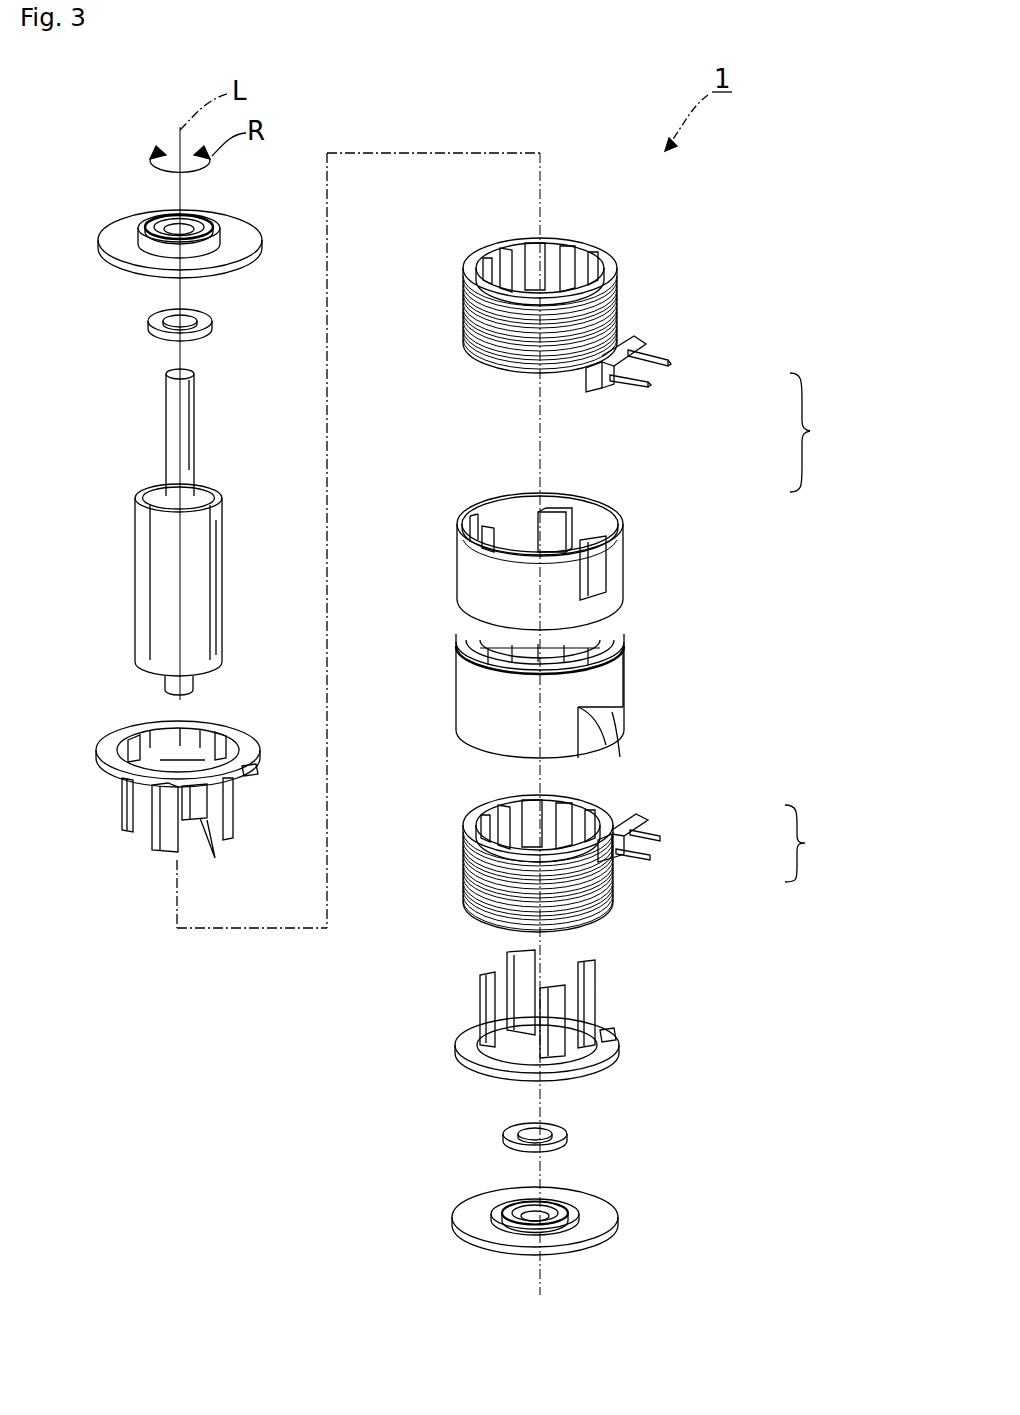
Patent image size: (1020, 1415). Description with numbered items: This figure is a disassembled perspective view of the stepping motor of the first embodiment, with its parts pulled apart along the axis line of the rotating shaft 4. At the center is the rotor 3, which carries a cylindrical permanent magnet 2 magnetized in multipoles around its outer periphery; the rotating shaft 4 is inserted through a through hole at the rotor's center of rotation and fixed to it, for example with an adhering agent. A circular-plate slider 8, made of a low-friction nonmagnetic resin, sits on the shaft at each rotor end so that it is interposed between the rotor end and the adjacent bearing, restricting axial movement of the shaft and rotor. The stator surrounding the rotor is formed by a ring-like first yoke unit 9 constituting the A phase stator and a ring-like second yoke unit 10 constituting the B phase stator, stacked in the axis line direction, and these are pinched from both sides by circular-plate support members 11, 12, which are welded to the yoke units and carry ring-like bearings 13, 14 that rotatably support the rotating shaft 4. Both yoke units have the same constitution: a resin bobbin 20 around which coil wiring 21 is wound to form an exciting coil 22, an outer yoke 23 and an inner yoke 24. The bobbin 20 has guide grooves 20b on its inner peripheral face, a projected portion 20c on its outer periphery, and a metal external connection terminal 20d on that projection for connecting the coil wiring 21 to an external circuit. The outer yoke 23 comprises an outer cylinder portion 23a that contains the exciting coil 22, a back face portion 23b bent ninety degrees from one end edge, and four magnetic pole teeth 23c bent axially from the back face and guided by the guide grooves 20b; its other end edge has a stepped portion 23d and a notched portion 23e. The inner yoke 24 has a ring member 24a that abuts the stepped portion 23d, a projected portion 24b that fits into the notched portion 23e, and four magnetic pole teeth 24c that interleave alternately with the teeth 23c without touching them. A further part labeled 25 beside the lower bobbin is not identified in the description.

The permanent magnet 2 is at (145, 616).
The rotor 3 is at (144, 589).
The rotating shaft 4 is at (165, 450).
The slider 8 is at (150, 334).
The first yoke unit 9 is at (806, 432).
The second yoke unit 10 is at (806, 843).
The support member 11 is at (242, 230).
The support member 12 is at (595, 1237).
The bearing 13 is at (152, 217).
The bearing 14 is at (508, 1237).
The bobbin 20 is at (598, 300).
The guide groove 20b is at (535, 240).
The projected portion 20c is at (594, 388).
The external connection terminal 20d is at (652, 385).
The coil wiring 21 is at (620, 296).
The exciting coil 22 is at (662, 335).
The outer yoke 23 is at (573, 637).
The outer cylinder portion 23a is at (456, 690).
The back face portion 23b is at (625, 632).
The magnetic pole teeth 23c is at (585, 528).
The stepped portion 23d is at (470, 505).
The notched portion 23e is at (643, 646).
The inner yoke 24 is at (413, 751).
The ring member 24a is at (130, 750).
The projected portion 24b is at (466, 925).
The magnetic pole teeth 24c is at (125, 832).
The second coil bobbin unit 25 is at (660, 863).